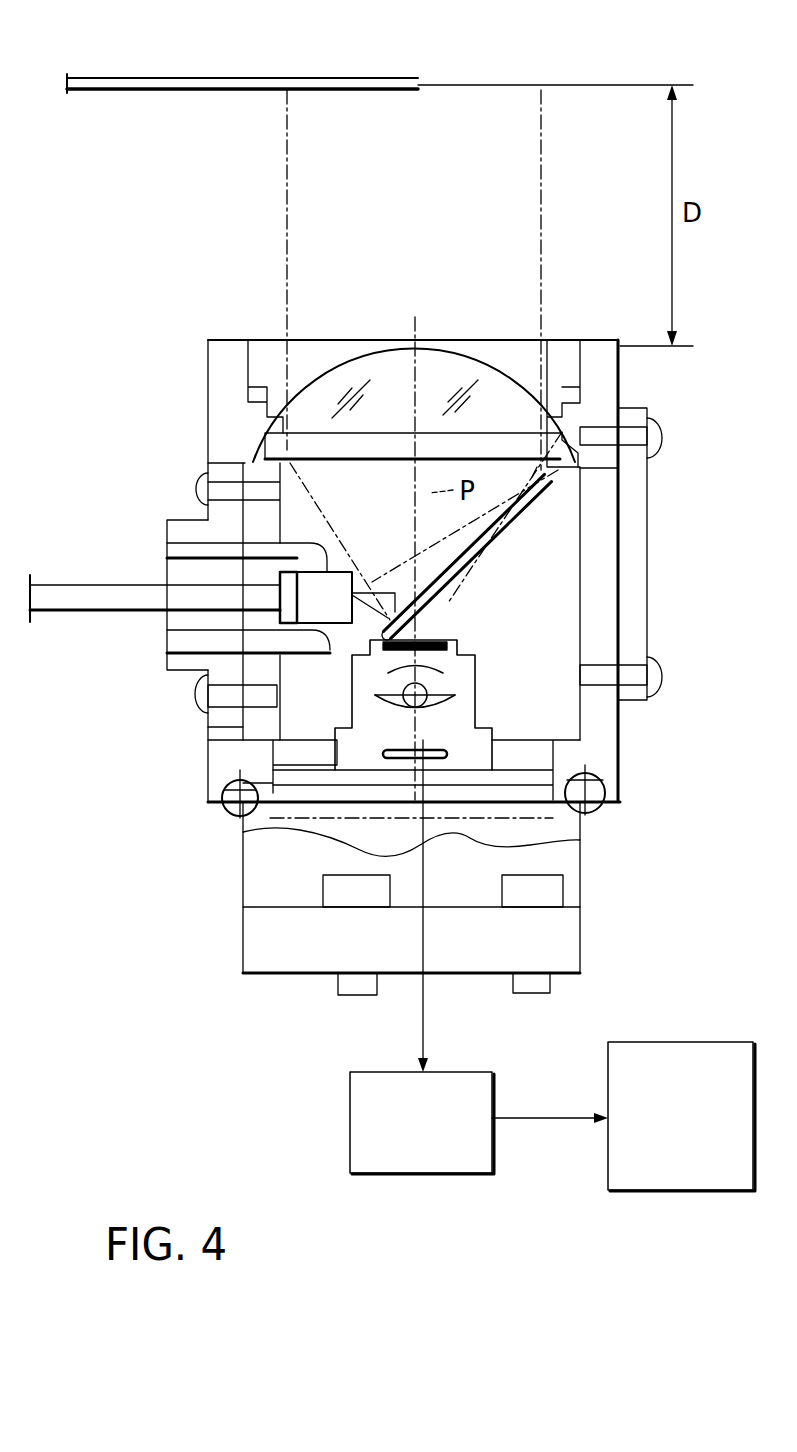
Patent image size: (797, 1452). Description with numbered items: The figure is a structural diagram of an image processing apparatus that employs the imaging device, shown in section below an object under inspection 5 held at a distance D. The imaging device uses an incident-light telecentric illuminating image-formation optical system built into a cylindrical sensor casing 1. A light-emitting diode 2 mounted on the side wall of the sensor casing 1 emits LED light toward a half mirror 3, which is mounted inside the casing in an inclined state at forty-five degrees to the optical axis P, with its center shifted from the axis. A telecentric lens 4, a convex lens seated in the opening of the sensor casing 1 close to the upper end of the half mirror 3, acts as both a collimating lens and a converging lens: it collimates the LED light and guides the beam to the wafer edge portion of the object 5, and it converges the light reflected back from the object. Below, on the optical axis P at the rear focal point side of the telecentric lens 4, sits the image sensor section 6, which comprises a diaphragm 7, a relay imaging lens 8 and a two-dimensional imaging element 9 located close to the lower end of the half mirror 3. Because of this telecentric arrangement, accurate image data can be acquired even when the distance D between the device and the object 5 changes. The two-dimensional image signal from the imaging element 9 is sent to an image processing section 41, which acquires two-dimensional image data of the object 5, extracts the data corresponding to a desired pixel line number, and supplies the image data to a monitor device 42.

The sensor casing 1 is at (627, 507).
The light-emitting diode (LED) 2 is at (318, 603).
The half mirror 3 is at (473, 563).
The telecentric lens 4 is at (443, 380).
The object under inspection 5 is at (212, 77).
The image sensor section 6 is at (362, 688).
The diaphragm 7 is at (427, 653).
The relay imaging lens 8 is at (380, 698).
The two-dimensional imaging element 9 is at (420, 753).
The image processing section 41 is at (410, 1173).
The monitor device 42 is at (682, 1177).